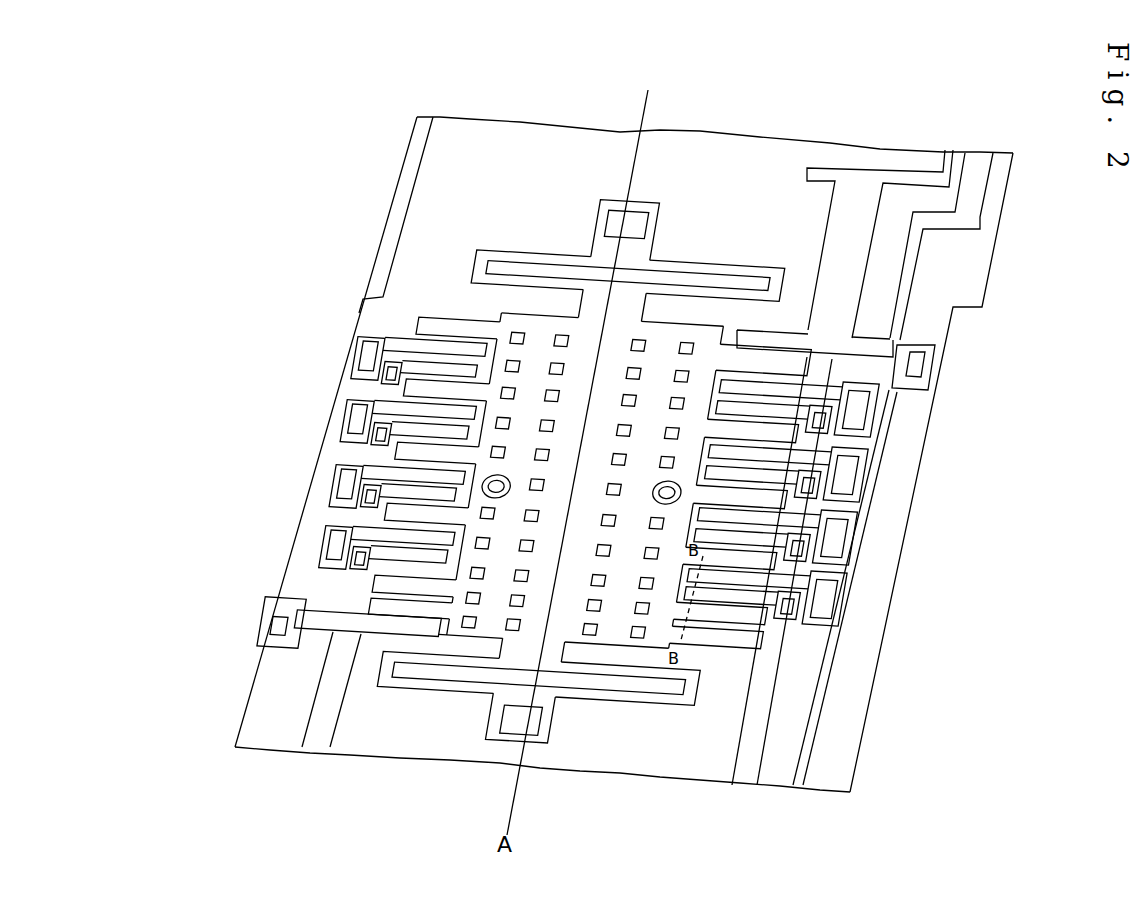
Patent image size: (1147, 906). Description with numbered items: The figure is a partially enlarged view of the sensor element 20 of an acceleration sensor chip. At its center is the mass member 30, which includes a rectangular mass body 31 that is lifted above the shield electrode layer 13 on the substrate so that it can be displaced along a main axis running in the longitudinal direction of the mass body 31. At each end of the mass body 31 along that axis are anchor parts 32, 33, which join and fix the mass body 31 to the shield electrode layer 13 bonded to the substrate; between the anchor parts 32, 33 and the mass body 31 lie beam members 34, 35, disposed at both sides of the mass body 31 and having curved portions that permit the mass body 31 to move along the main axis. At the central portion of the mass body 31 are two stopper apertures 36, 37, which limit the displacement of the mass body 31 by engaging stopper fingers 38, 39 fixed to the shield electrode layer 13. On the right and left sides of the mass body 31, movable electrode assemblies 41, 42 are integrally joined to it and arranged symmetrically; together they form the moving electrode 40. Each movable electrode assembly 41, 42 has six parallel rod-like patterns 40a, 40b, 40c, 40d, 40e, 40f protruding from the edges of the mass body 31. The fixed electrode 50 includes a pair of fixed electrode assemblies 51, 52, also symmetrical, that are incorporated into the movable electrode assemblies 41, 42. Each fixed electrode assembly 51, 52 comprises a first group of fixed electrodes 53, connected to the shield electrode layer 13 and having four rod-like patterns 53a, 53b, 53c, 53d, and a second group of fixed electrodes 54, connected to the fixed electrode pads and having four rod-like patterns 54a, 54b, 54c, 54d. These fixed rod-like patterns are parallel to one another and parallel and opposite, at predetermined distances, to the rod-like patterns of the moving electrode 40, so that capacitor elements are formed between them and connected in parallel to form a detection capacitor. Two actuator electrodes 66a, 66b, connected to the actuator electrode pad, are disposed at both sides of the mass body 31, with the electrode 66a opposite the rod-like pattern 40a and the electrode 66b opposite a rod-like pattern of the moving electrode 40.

The shield electrode layer 13 is at (403, 745).
The sensor element 20 is at (485, 243).
The mass member 30 is at (656, 205).
The mass body 31 is at (542, 330).
The anchor part 32 is at (510, 722).
The anchor part 33 is at (647, 228).
The beam member 34 is at (648, 690).
The beam member 35 is at (745, 264).
The stopper aperture 36 is at (510, 487).
The stopper aperture 37 is at (650, 497).
The stopper finger 38 is at (500, 478).
The stopper finger 39 is at (662, 487).
The moving electrode 40 is at (765, 648).
The rod-like pattern 40a is at (566, 623).
The rod-like pattern 40b is at (570, 600).
The rod-like pattern 40c is at (580, 536).
The rod-like pattern 40d is at (590, 475).
The rod-like pattern 40e is at (601, 411).
The rod-like pattern 40f is at (613, 346).
The movable electrode assembly 41 is at (740, 648).
The movable electrode assembly 42 is at (437, 312).
The fixed electrode 50 is at (367, 310).
The fixed electrode assembly 51 is at (1006, 392).
The fixed electrode assembly 52 is at (215, 340).
The first group of fixed electrodes 53 is at (240, 588).
The rod-like pattern 53a is at (358, 558).
The rod-like pattern 53b is at (337, 540).
The rod-like pattern 53c is at (368, 495).
The rod-like pattern 53d is at (347, 480).
The second group of fixed electrodes 54 is at (290, 313).
The rod-like pattern 54a is at (380, 432).
The rod-like pattern 54b is at (360, 418).
The rod-like pattern 54c is at (395, 378).
The rod-like pattern 54d is at (393, 349).
The actuator electrode 66a is at (280, 625).
The actuator electrode 66b is at (905, 343).